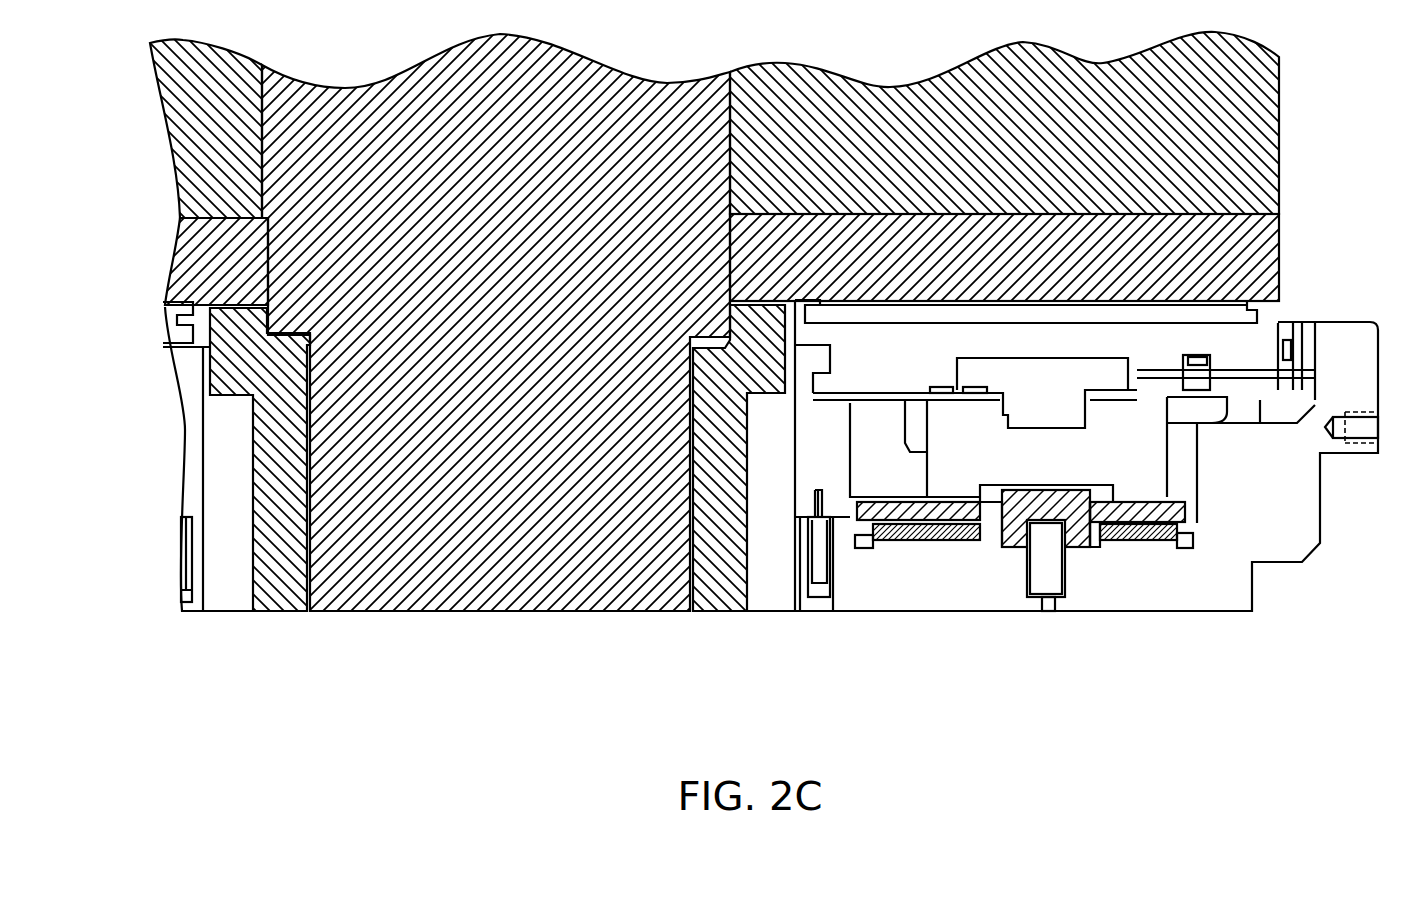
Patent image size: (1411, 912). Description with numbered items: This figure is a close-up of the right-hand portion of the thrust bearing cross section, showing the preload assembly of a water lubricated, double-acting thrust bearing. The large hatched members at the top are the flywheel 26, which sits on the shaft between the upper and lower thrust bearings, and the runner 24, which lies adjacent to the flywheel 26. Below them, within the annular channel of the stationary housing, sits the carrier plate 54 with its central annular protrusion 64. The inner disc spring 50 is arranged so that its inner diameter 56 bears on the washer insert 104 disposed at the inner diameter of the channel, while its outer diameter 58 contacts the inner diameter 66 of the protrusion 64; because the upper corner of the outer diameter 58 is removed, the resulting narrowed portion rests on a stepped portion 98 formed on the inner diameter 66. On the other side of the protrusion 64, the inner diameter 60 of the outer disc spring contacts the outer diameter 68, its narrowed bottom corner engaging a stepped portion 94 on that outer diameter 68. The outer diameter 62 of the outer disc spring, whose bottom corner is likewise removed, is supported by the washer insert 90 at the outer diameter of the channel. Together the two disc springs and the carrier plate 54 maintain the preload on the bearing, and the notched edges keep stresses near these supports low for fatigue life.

The flywheel 26 is at (1273, 127).
The runner 24 is at (1277, 252).
The carrier plate 54 is at (1180, 523).
The outer diameter of the outer disc spring 62 is at (1197, 528).
The inner diameter of the inner disc spring 56 is at (850, 533).
The washer insert 104 is at (863, 550).
The inner disc spring 50 is at (920, 550).
The stepped portion 98 is at (957, 540).
The outer diameter of the inner disc spring 58 is at (987, 537).
The inner diameter of the annular protrusion 66 is at (997, 550).
The central annular protrusion 64 is at (1082, 548).
The outer diameter of the annular protrusion 68 is at (1090, 550).
The inner diameter of the outer disc spring 60 is at (1100, 550).
The stepped portion 94 is at (1117, 543).
The washer insert 90 is at (1187, 550).